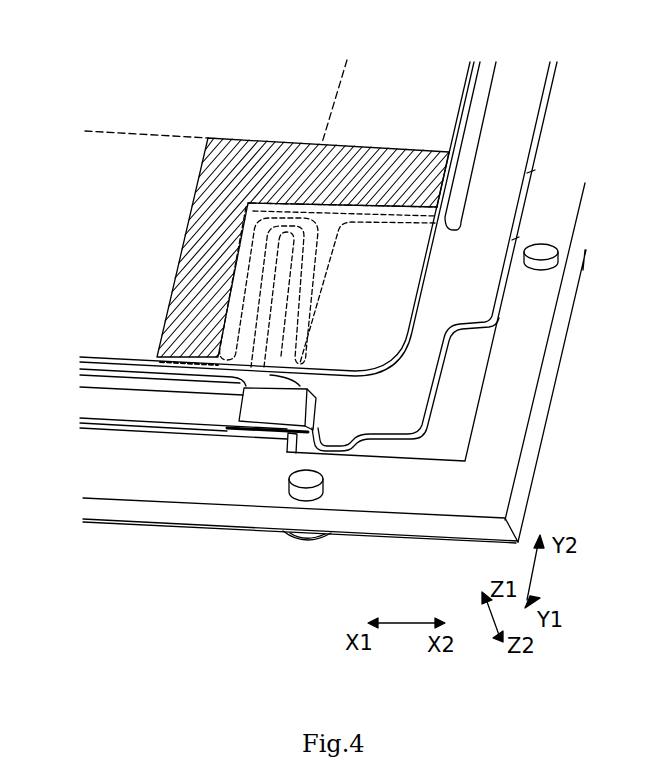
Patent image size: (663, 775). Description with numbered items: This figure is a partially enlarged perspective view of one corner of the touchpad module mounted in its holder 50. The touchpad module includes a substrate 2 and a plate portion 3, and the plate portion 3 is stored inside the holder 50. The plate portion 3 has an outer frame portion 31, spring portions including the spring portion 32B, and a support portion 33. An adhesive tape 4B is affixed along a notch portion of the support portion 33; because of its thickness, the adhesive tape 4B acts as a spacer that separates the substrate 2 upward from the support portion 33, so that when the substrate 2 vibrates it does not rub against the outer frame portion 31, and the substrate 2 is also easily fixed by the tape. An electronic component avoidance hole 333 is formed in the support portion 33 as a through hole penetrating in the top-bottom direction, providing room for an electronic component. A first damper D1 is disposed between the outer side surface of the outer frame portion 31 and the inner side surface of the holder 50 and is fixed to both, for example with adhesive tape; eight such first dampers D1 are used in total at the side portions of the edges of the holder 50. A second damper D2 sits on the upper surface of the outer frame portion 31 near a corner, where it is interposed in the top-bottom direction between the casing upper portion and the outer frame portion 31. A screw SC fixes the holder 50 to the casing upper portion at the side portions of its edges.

The electronic component avoidance hole 333 is at (340, 78).
The adhesive tape 4B is at (406, 149).
The support portion 33 is at (473, 98).
The substrate 2 is at (420, 291).
The outer frame portion 31 is at (458, 333).
The plate portion 3 is at (418, 437).
The holder 50 is at (532, 493).
The first damper D1 is at (513, 198).
The second damper D2 is at (242, 398).
The screw SC is at (330, 542).
The spring portion 32B is at (296, 325).